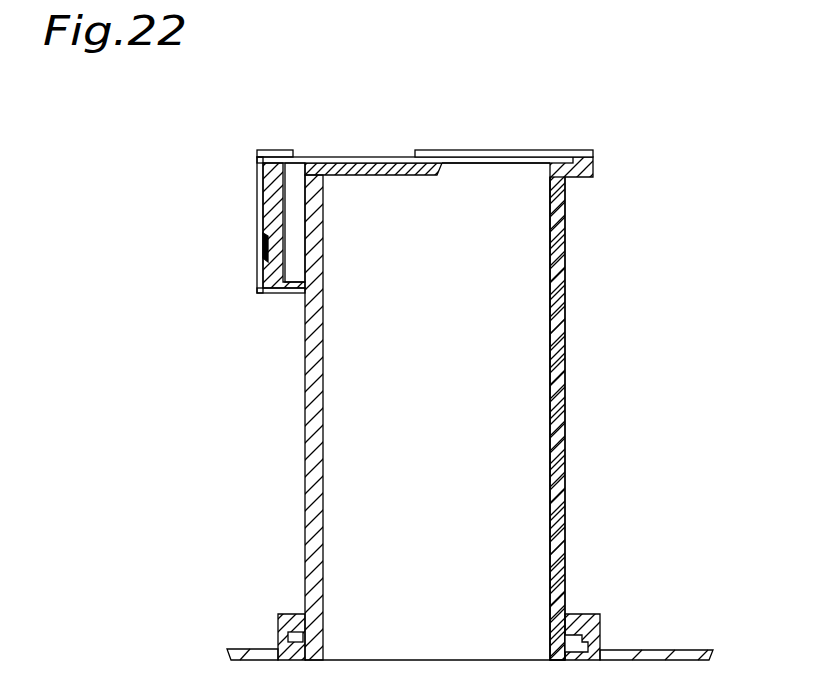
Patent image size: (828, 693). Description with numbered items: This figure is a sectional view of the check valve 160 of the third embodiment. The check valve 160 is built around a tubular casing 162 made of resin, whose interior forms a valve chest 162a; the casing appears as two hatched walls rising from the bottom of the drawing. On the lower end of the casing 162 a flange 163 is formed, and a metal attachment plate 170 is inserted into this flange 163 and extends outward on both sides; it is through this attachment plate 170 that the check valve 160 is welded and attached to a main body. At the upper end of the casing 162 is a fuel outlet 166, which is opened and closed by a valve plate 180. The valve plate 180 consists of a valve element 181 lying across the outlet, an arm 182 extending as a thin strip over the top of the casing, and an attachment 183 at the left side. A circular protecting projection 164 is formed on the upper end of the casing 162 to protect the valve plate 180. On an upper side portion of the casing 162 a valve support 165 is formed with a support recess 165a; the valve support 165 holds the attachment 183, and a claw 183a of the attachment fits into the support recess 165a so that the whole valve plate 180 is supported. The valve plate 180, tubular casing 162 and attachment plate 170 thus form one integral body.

The check valve 160 is at (645, 251).
The tubular casing 162 is at (558, 279).
The valve chest 162a is at (515, 383).
The flange 163 is at (580, 615).
The protecting projection 164 is at (537, 150).
The valve support 165 is at (260, 187).
The support recess 165a is at (260, 233).
The fuel outlet 166 is at (512, 172).
The attachment plate 170 is at (647, 652).
The valve plate 180 is at (363, 162).
The valve element 181 is at (476, 164).
The arm 182 is at (310, 148).
The attachment 183 is at (260, 253).
The claw 183a is at (268, 290).